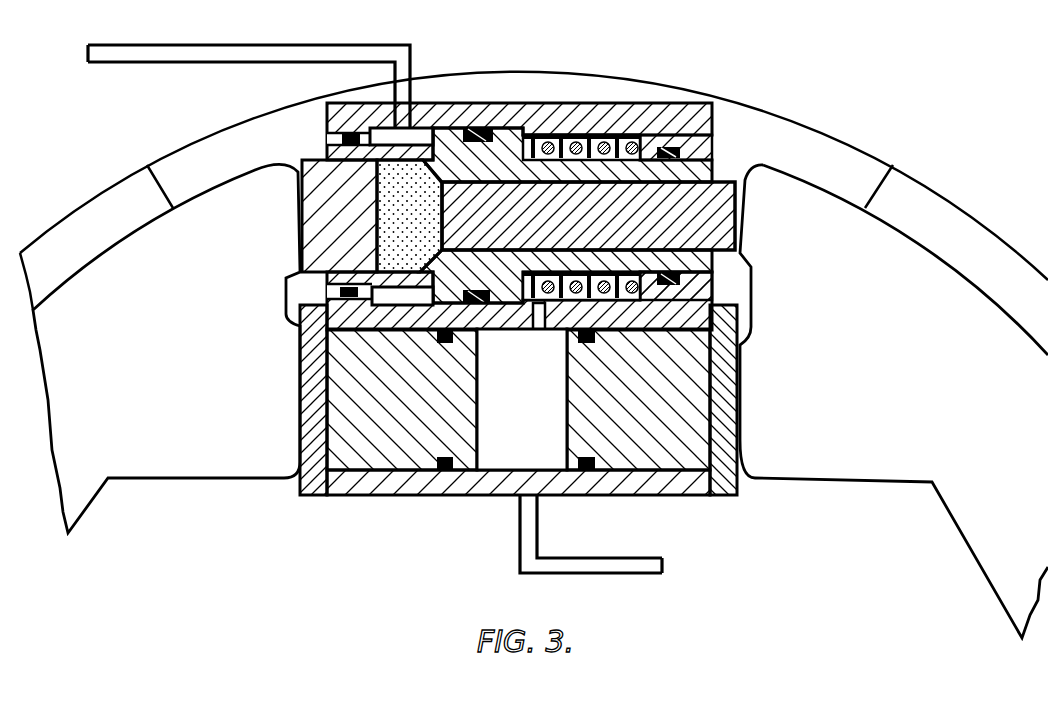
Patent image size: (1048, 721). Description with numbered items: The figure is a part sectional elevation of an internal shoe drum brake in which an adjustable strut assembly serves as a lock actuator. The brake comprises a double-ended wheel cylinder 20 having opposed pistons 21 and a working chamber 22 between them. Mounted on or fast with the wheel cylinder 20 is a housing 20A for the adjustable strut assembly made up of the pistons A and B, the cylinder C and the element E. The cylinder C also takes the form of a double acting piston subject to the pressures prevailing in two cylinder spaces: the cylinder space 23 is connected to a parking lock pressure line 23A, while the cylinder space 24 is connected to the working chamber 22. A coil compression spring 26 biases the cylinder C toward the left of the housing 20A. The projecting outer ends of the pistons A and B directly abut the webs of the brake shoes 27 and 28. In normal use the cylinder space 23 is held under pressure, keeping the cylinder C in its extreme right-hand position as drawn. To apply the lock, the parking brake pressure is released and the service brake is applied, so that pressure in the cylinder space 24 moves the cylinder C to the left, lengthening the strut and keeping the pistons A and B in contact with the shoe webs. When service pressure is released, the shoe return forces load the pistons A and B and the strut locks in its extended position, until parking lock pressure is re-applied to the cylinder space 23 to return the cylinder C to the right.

The wheel cylinder 20 is at (398, 487).
The housing 20A is at (575, 110).
The pistons 21 is at (343, 405).
The working chamber 22 is at (538, 407).
The cylinder space 23 is at (421, 138).
The parking lock pressure line 23A is at (263, 52).
The cylinder space 24 is at (712, 128).
The coil compression spring 26 is at (550, 137).
The brake shoe 27 is at (213, 361).
The brake shoe 28 is at (822, 362).
The piston A is at (320, 213).
The piston B is at (698, 205).
The cylinder C is at (500, 158).
The strut assembly element E is at (390, 203).